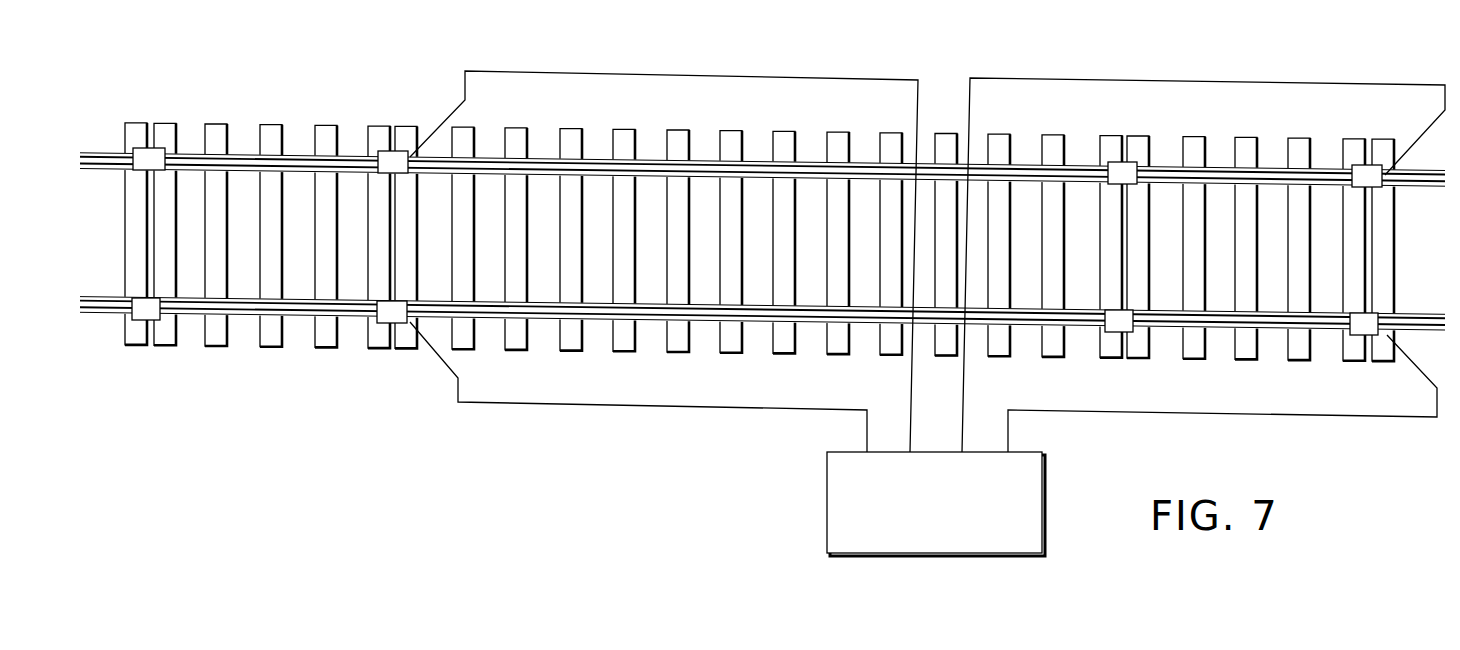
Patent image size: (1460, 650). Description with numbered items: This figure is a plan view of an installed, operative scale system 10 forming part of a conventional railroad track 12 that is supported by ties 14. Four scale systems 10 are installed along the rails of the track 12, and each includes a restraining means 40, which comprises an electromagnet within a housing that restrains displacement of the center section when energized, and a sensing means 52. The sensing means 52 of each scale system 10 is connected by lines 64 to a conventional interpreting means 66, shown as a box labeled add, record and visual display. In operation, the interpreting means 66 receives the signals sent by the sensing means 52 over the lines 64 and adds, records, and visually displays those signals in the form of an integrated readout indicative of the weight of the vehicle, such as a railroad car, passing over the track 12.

The scale system 10 is at (300, 150).
The railroad track 12 is at (703, 330).
The ties 14 is at (787, 137).
The restraining means 40 is at (139, 148).
The sensing means 52 is at (388, 148).
The lines 64 is at (658, 72).
The interpreting means 66 is at (840, 490).